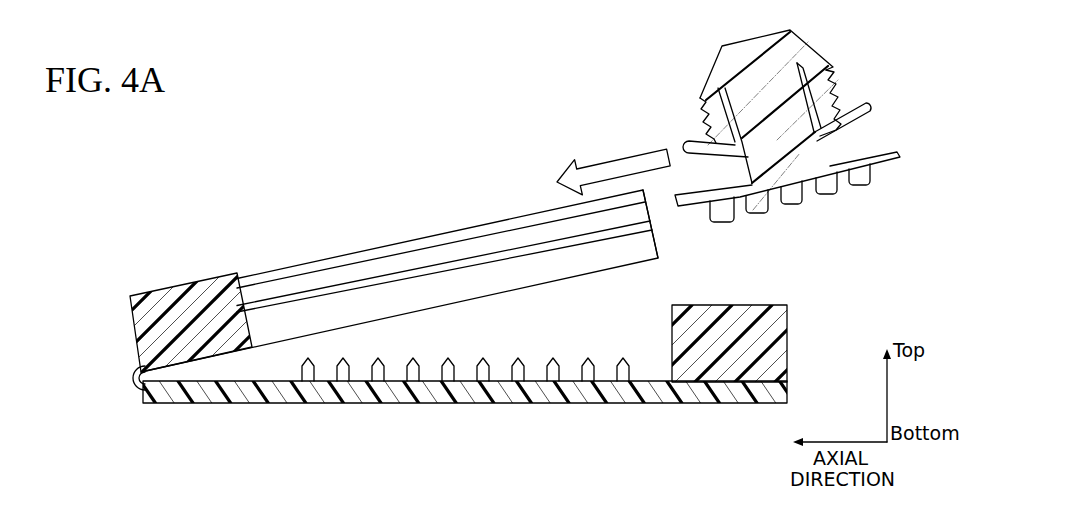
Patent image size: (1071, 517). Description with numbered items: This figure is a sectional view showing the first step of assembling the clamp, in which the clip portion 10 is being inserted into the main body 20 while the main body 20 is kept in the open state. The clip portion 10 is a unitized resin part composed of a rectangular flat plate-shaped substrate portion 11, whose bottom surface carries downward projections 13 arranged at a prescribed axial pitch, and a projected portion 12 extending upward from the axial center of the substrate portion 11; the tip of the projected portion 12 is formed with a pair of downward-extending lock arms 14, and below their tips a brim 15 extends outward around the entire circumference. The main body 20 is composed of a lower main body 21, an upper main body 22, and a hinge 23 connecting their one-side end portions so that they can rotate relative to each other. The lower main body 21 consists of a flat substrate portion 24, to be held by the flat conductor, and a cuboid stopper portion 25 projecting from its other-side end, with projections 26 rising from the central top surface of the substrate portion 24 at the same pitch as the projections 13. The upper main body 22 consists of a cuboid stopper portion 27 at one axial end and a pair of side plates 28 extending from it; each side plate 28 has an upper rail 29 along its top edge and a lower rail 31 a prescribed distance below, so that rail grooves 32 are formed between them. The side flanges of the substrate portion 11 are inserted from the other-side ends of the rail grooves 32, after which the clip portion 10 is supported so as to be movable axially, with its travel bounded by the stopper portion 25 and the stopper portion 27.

The clip portion 10 is at (785, 134).
The substrate portion 11 is at (810, 190).
The projected portion 12 is at (770, 93).
The projections 13 is at (827, 193).
The lock arms 14 is at (708, 113).
The brim 15 is at (867, 102).
The main body 20 is at (401, 313).
The lower main body 21 is at (516, 389).
The upper main body 22 is at (436, 261).
The hinge 23 is at (130, 390).
The substrate portion 24 is at (502, 404).
The stopper portion 25 is at (788, 343).
The projections 26 is at (552, 362).
The stopper portion 27 is at (193, 297).
The side plates 28 is at (655, 240).
The upper rail 29 is at (460, 235).
The lower rail 31 is at (502, 258).
The rail grooves 32 is at (422, 260).